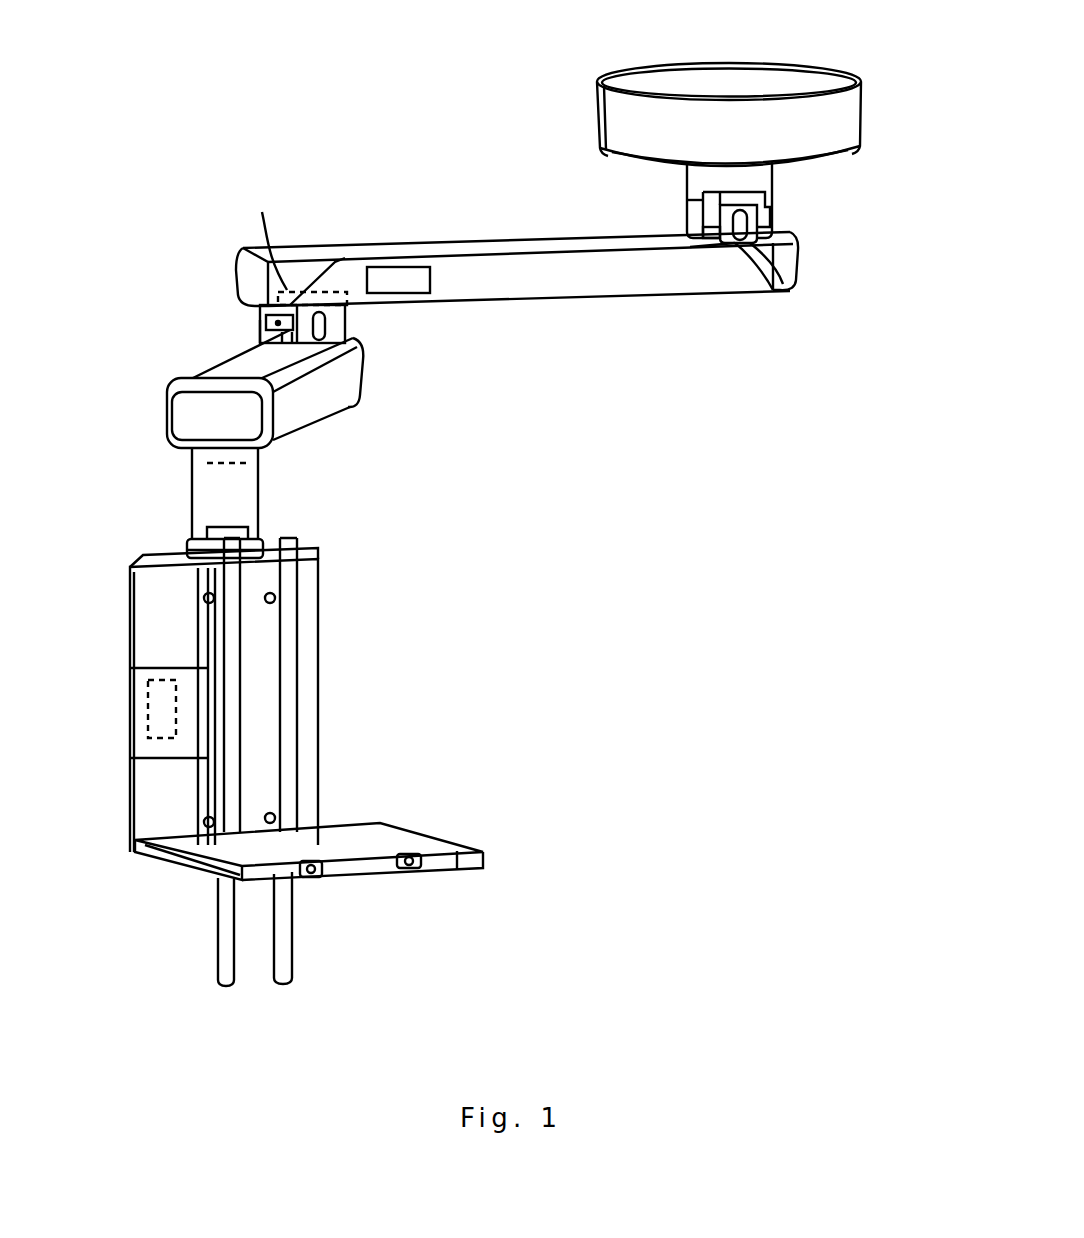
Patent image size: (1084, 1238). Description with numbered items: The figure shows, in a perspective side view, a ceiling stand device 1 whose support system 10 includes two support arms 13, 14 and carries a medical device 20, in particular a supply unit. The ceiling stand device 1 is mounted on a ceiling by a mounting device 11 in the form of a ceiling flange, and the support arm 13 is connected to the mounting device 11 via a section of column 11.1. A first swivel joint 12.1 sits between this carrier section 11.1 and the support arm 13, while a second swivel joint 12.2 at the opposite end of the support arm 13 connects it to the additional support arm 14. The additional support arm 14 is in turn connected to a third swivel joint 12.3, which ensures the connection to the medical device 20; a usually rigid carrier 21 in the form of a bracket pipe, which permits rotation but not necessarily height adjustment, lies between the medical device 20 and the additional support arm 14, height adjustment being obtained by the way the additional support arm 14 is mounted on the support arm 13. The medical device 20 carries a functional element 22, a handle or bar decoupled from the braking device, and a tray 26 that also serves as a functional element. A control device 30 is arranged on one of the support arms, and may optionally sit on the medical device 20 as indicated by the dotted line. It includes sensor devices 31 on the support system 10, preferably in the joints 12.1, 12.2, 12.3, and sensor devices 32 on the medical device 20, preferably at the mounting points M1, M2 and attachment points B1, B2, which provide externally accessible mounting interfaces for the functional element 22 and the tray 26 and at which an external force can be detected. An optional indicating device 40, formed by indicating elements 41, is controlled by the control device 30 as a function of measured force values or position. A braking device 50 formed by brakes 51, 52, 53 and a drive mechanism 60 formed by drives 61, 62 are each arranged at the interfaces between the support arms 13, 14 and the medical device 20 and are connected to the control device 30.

The ceiling stand device 1 is at (477, 118).
The support system 10 is at (580, 404).
The mounting device 11 is at (858, 118).
The section of column 11.1 is at (772, 177).
The first swivel joint 12.1 is at (775, 214).
The second swivel joint 12.2 is at (258, 320).
The third swivel joint 12.3 is at (190, 550).
The support arm 13 is at (566, 300).
The additional support arm 14 is at (322, 406).
The medical device 20 is at (320, 632).
The carrier 21 is at (190, 487).
The functional element 22 is at (292, 706).
The tray 26 is at (427, 832).
The control device 30 is at (398, 273).
The sensor devices 31 is at (690, 247).
The sensor devices 32 is at (300, 598).
The indicating device 40 is at (730, 254).
The indicating element 41 is at (770, 299).
The braking device 50 is at (708, 184).
The brake 51 is at (702, 222).
The brake 52 is at (347, 315).
The brake 53 is at (255, 528).
The drive mechanism 60 is at (326, 292).
The drive 61 is at (268, 235).
The drive 62 is at (192, 462).
The attachment point B1 is at (210, 604).
The attachment point B2 is at (285, 600).
The mounting point M1 is at (205, 827).
The mounting point M2 is at (290, 826).